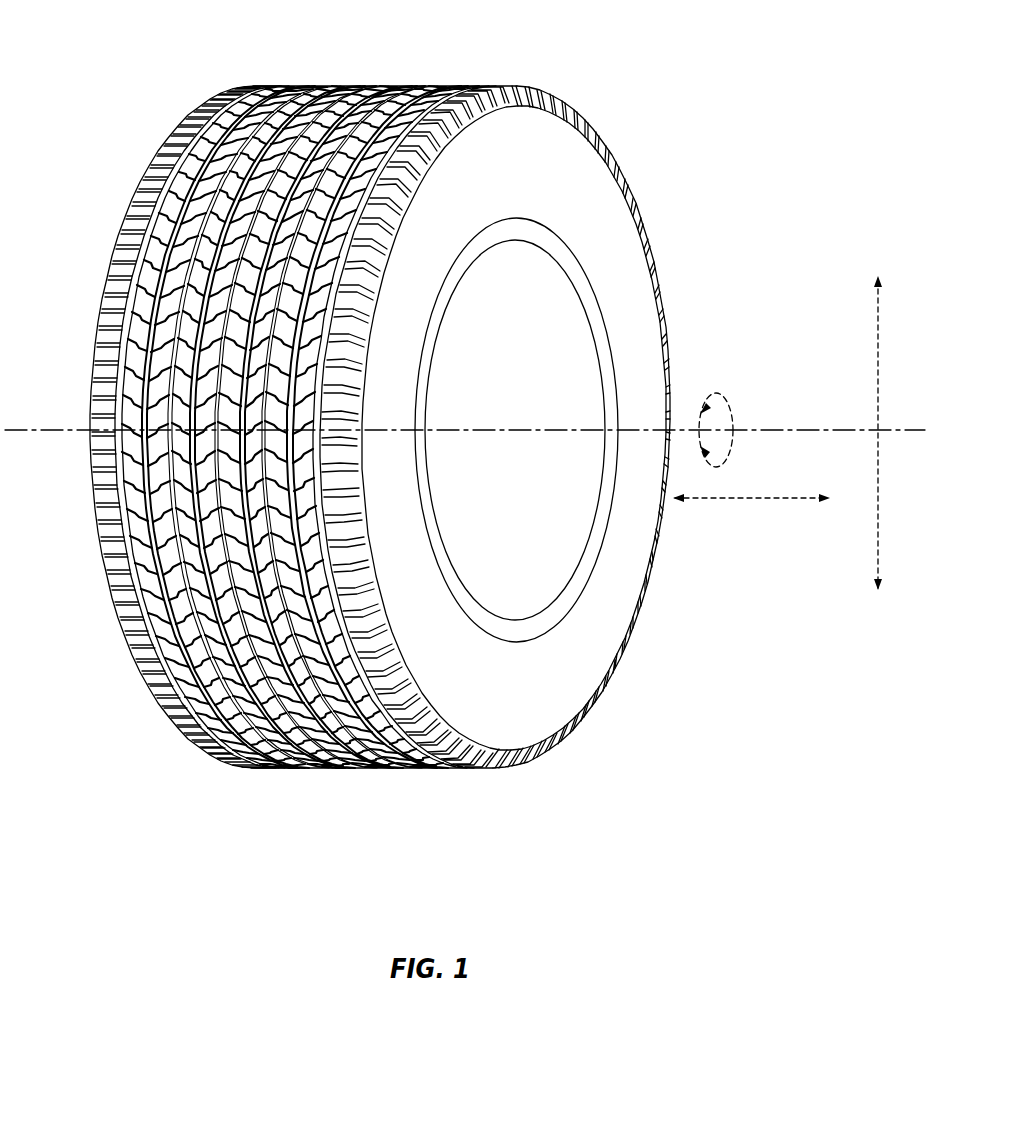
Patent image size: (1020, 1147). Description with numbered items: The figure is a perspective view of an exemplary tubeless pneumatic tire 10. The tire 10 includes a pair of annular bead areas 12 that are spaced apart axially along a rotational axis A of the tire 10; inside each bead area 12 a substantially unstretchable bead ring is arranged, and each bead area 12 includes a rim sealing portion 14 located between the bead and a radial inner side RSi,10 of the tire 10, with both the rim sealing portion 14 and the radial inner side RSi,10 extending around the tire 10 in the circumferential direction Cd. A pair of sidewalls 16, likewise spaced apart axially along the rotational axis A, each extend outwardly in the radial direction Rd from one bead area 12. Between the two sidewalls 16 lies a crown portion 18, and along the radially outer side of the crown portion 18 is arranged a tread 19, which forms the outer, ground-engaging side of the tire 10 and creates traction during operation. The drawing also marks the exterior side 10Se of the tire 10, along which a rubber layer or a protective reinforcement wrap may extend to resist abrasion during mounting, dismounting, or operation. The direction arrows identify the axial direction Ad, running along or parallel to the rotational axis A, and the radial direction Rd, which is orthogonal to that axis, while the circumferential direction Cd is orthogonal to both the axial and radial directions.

The tubeless pneumatic tire 10 is at (670, 44).
The annular bead area 12 is at (628, 326).
The rim sealing portion 14 is at (609, 452).
The sidewall 16 is at (627, 222).
The crown portion 18 is at (547, 60).
The tread 19 is at (177, 147).
The exterior side of the tire 10Se is at (583, 168).
The radial inner side of the tire RSi,10 is at (590, 502).
The rotational axis A is at (783, 430).
The axial direction Ad is at (751, 499).
The circumferential direction Cd is at (731, 410).
The radial direction Rd is at (877, 435).